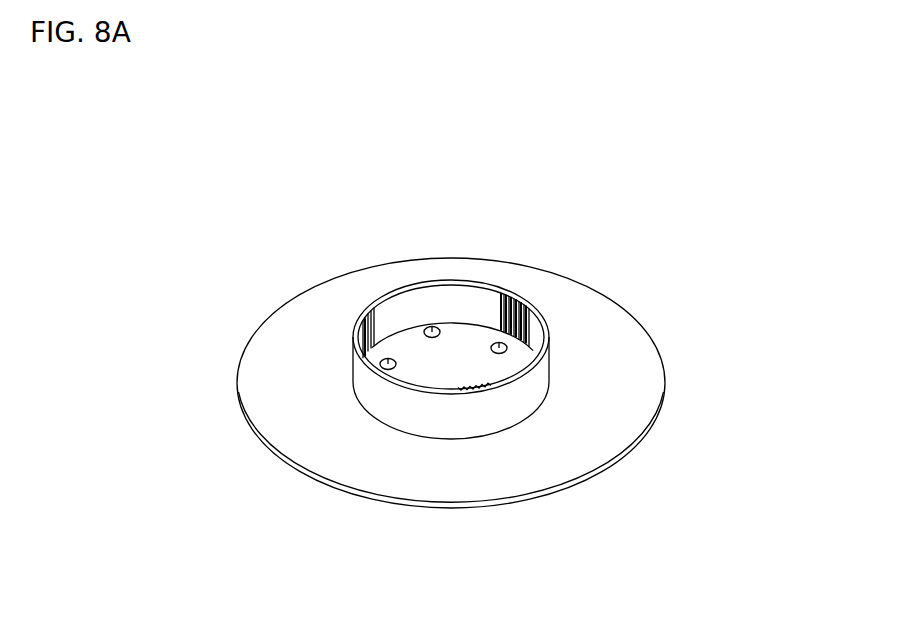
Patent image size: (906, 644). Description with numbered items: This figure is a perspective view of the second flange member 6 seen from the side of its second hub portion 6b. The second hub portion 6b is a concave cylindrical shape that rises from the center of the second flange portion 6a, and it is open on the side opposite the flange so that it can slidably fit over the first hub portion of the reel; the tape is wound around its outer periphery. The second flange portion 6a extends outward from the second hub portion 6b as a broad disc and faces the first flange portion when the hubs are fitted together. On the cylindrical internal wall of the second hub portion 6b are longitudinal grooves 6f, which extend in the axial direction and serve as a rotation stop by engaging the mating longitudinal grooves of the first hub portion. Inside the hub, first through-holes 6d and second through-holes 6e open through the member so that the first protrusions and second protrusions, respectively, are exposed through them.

The second flange member 6 is at (504, 339).
The second flange portion 6a is at (572, 300).
The second hub portion 6b is at (517, 293).
The first through-holes 6d is at (434, 327).
The second through-holes 6e is at (507, 348).
The longitudinal grooves 6f is at (367, 317).